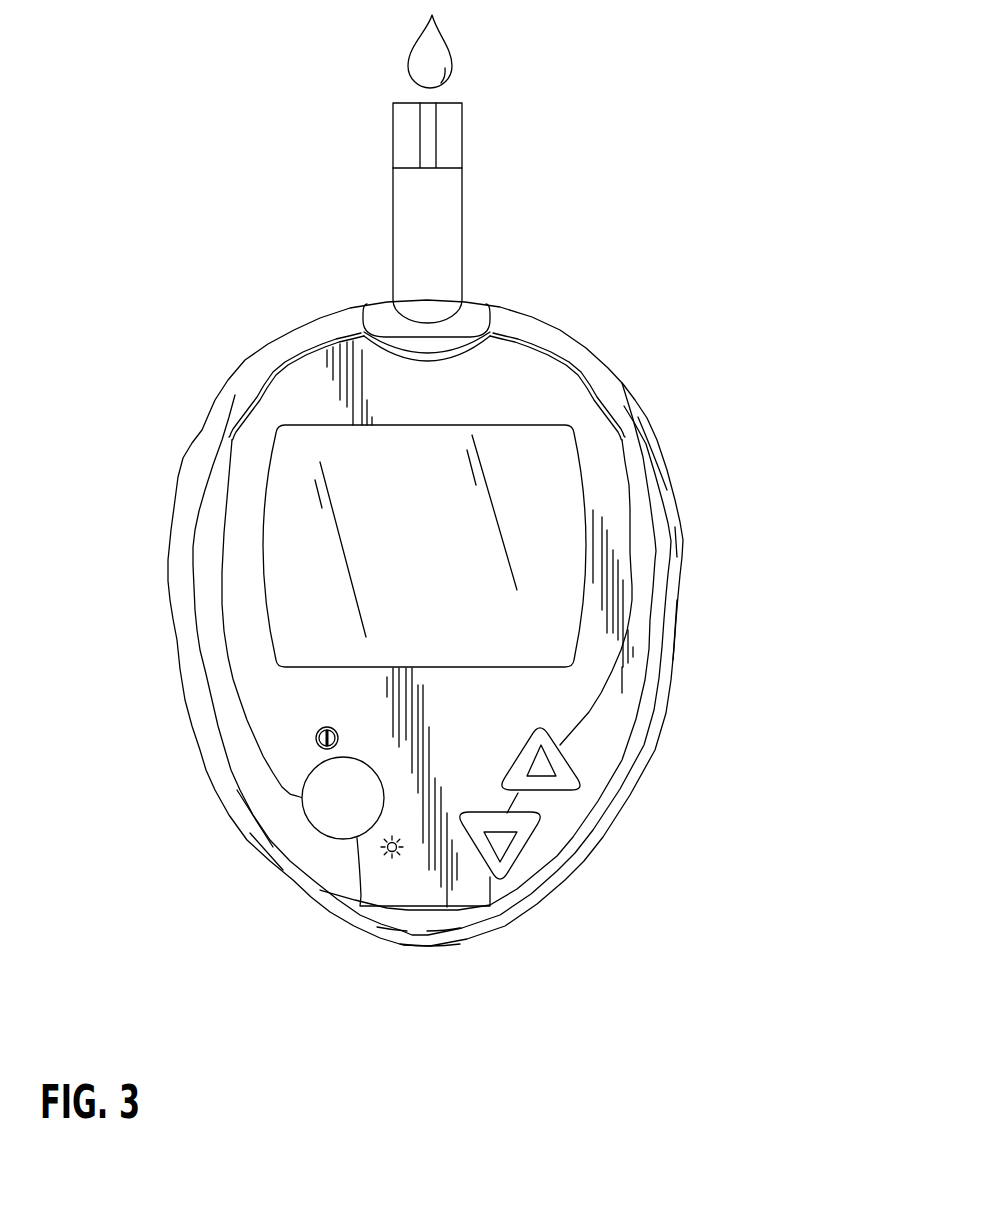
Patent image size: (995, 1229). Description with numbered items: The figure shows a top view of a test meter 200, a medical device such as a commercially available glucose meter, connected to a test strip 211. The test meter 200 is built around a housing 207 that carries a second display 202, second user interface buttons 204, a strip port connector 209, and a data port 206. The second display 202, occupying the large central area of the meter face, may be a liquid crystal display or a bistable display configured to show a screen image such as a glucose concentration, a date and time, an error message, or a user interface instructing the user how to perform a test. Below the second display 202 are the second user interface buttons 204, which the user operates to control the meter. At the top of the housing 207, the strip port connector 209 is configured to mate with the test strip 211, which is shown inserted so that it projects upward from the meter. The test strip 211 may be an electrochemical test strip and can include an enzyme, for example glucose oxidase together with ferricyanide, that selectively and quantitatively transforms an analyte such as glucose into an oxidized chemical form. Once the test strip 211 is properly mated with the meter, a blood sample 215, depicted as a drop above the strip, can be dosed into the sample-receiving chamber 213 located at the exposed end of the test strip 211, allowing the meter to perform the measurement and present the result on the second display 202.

The test meter 200 is at (650, 337).
The second display 202 is at (570, 485).
The second user interface buttons 204 is at (303, 798).
The data port 206 is at (417, 947).
The housing 207 is at (673, 633).
The strip port connector 209 is at (391, 298).
The test strip 211 is at (463, 243).
The sample-receiving chamber 213 is at (438, 142).
The blood sample 215 is at (438, 50).